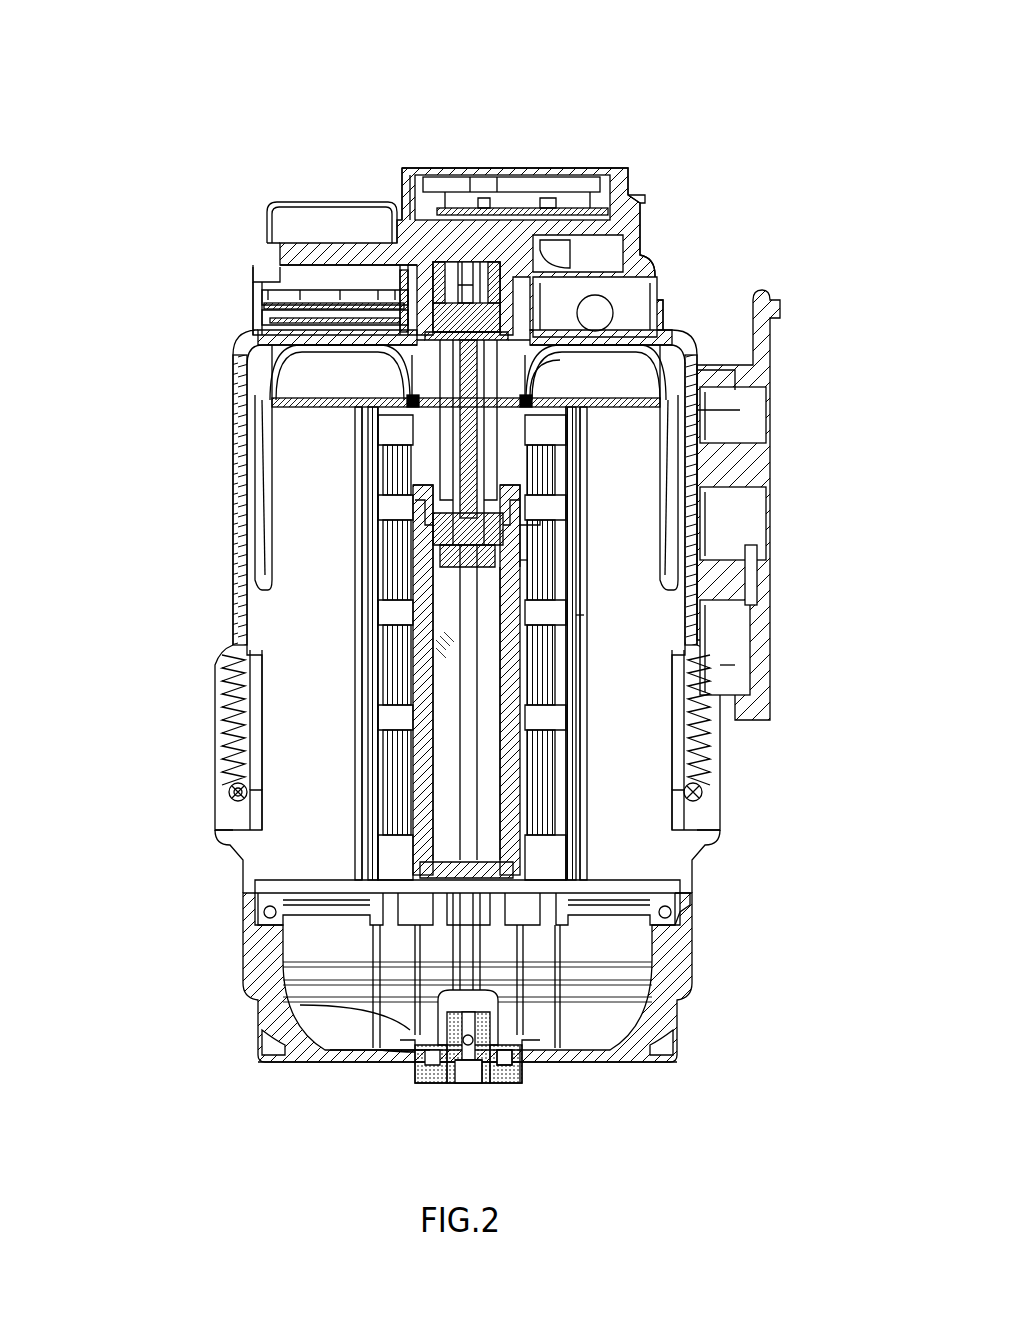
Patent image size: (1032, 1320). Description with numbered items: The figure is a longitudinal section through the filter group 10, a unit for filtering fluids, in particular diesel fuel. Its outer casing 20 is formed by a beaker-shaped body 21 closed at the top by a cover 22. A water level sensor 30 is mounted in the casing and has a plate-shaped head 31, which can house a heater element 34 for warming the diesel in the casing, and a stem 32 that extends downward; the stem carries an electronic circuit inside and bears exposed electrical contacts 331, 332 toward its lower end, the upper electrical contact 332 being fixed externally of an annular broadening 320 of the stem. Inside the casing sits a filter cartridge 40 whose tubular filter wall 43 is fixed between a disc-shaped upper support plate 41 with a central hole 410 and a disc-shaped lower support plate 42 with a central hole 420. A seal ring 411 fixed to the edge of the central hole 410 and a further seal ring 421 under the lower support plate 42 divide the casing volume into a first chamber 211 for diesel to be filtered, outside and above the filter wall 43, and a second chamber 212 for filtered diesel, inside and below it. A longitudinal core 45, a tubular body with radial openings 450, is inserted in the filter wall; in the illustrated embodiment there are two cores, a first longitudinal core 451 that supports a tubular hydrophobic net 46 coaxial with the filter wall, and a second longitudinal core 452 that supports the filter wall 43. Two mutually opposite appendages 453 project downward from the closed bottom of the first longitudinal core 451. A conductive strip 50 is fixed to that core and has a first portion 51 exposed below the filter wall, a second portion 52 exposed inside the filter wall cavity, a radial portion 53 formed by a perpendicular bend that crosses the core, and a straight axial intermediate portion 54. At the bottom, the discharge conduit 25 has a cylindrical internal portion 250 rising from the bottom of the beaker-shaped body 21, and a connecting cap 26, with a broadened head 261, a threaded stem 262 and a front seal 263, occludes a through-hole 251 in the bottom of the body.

The filter group 10 is at (142, 113).
The outer casing 20 is at (215, 480).
The beaker-shaped body 21 is at (250, 945).
The cover 22 is at (240, 512).
The discharge conduit 25 is at (468, 1070).
The connecting cap 26 is at (420, 1080).
The water level sensor 30 is at (597, 183).
The plate-shaped head 31 is at (640, 180).
The stem 32 is at (500, 300).
The heater element 34 is at (336, 262).
The filter cartridge 40 is at (262, 605).
The upper support plate 41 is at (635, 390).
The lower support plate 42 is at (592, 878).
The filter wall 43 is at (640, 515).
The longitudinal core 45 is at (650, 905).
The hydrophobic net 46 is at (235, 680).
The conductive strip 50 is at (408, 625).
The first portion 51 is at (450, 860).
The second portion 52 is at (430, 568).
The radial portion 53 is at (428, 552).
The intermediate portion 54 is at (390, 730).
The first chamber 211 is at (720, 735).
The second chamber 212 is at (630, 923).
The cylindrical internal portion 250 is at (500, 1072).
The through-hole 251 is at (530, 1070).
The broadened head 261 is at (345, 1005).
The threaded stem 262 is at (415, 1050).
The front seal 263 is at (385, 1046).
The annular broadening 320 is at (690, 440).
The electrical contact 331 is at (570, 575).
The upper electrical contact 332 is at (565, 540).
The central hole 410 is at (520, 370).
The seal ring 411 is at (398, 395).
The central hole 420 is at (530, 920).
The further seal ring 421 is at (675, 912).
The radial openings 450 is at (700, 682).
The first longitudinal core 451 is at (230, 793).
The second longitudinal core 452 is at (580, 632).
The appendage 453 is at (440, 895).